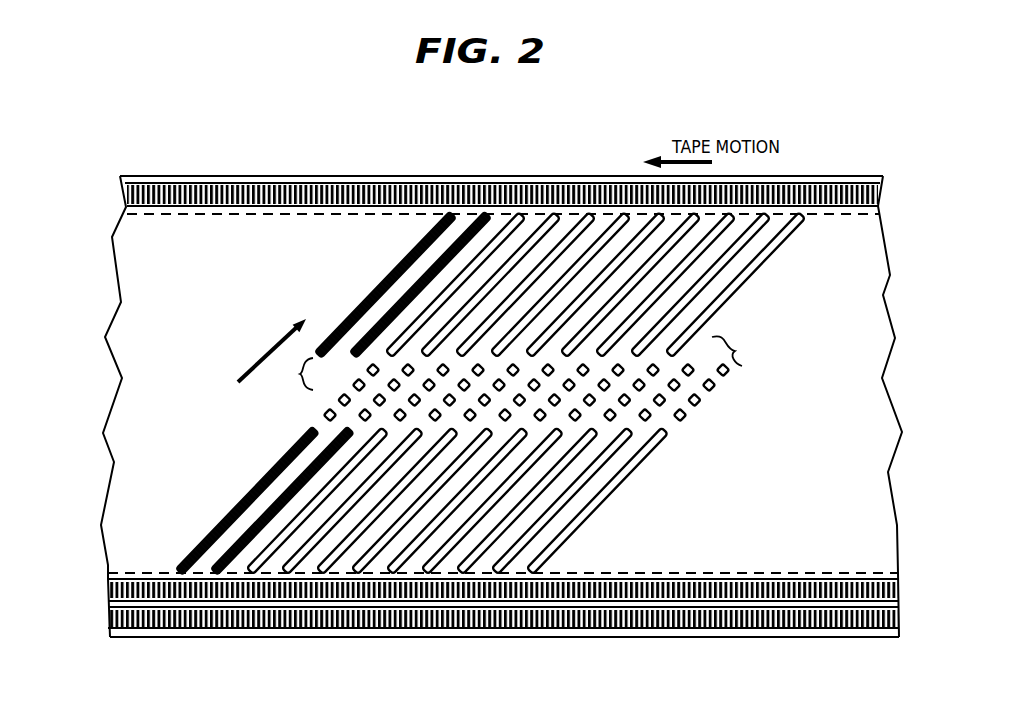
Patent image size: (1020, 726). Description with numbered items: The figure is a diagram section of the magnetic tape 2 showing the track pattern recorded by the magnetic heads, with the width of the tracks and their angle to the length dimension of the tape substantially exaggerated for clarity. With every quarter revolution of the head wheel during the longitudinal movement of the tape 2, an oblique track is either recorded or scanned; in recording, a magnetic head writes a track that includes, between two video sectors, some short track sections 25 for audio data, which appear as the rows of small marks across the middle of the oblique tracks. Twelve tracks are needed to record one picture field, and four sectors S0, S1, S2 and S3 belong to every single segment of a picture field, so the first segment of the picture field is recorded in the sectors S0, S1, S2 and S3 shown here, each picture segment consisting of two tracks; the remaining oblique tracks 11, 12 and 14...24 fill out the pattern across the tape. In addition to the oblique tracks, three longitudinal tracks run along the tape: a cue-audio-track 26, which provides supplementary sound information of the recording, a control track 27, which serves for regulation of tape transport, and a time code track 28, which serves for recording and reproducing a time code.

The tape 2 is at (128, 332).
The first servo stripe 11 is at (462, 212).
The second servo stripe 12 is at (497, 212).
The servo stripes 14...24 is at (210, 577).
The short track sections 25 is at (700, 398).
The cue-audio-track 26 is at (262, 198).
The control track 27 is at (737, 582).
The time code track 28 is at (738, 633).
The sector S0 is at (406, 247).
The sector S1 is at (383, 285).
The sector S2 is at (218, 527).
The sector S3 is at (190, 557).